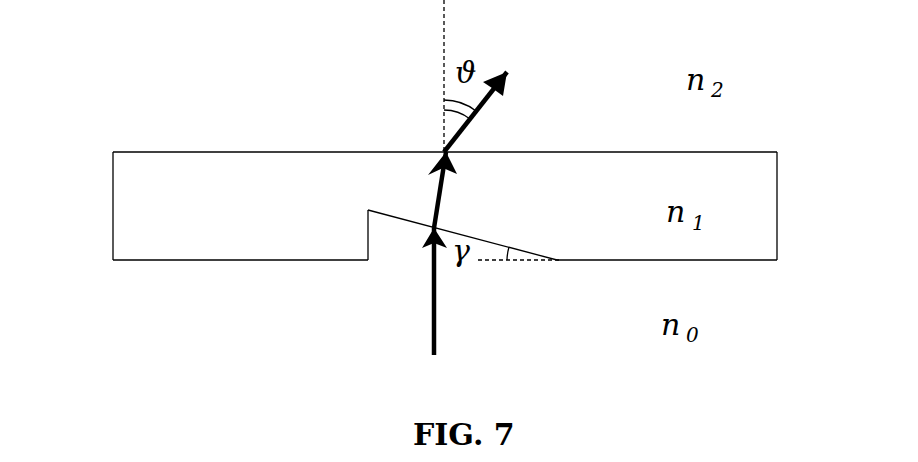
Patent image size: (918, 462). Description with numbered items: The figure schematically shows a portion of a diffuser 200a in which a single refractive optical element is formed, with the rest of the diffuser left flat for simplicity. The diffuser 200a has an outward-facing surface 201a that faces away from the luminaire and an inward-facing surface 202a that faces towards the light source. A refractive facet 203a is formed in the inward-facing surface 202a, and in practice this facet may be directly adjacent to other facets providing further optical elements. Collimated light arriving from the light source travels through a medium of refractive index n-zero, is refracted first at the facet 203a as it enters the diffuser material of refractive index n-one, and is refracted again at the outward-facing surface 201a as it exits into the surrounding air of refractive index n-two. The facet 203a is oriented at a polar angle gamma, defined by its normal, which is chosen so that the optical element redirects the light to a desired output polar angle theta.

The diffuser 200a is at (213, 171).
The outward-facing surface 201a is at (282, 152).
The inward-facing surface 202a is at (273, 260).
The refractive facet 203a is at (487, 240).